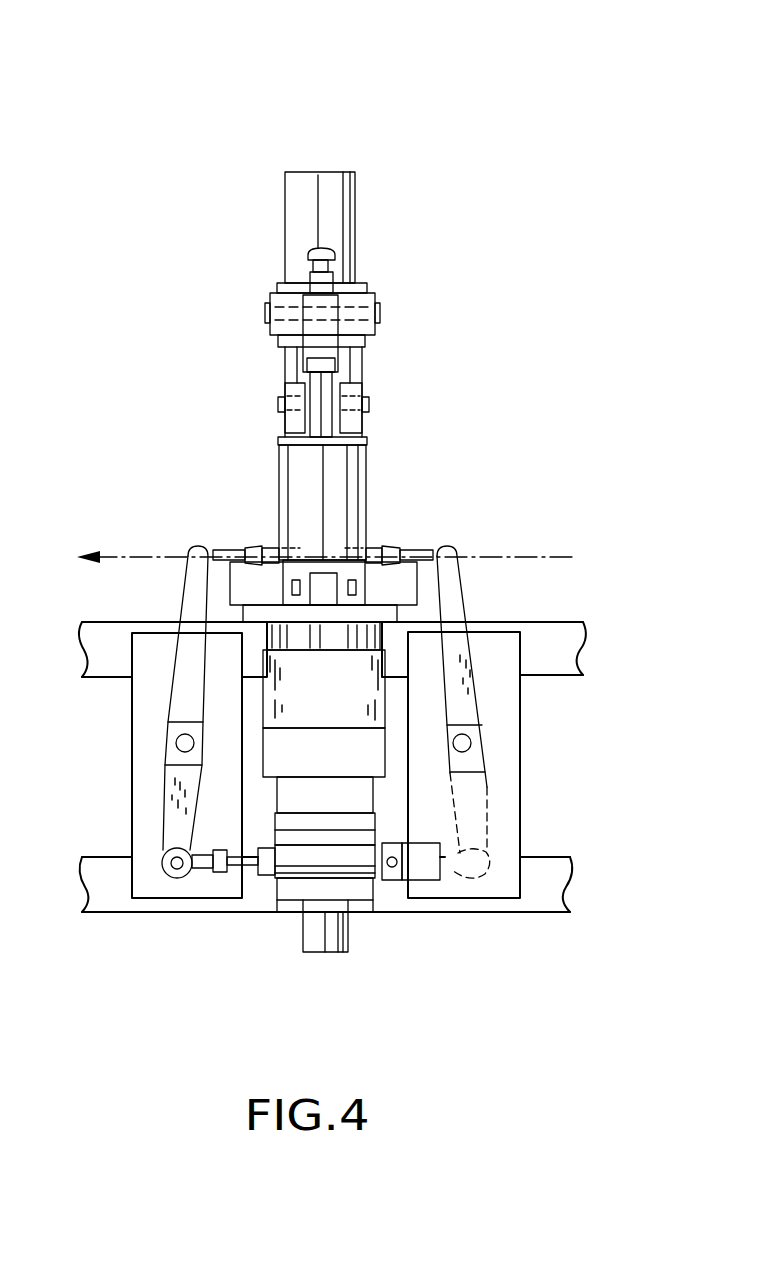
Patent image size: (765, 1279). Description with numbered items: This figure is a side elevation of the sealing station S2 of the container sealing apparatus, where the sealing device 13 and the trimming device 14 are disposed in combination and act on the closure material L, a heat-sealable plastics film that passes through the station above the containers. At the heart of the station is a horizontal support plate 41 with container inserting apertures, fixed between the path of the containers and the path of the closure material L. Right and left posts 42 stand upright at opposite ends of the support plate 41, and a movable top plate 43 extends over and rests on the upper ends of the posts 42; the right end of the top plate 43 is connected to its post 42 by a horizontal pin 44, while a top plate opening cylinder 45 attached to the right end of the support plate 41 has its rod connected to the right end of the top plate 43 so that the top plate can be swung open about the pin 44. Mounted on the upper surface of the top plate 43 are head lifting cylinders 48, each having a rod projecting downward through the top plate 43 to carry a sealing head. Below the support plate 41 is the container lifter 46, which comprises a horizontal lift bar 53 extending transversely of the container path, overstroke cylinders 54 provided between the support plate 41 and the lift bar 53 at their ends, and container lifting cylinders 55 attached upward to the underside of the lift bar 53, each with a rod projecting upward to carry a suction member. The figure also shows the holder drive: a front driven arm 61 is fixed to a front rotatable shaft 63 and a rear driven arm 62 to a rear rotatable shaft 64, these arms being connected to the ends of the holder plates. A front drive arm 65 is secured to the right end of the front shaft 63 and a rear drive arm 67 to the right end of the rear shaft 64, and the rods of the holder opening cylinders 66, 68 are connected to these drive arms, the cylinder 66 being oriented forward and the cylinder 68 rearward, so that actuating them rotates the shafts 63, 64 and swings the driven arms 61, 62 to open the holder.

The sealing station S2 is at (325, 128).
The head lifting cylinder 48 is at (292, 205).
The sealing device 13 is at (392, 246).
The trimming device 14 is at (402, 298).
The movable top plate 43 is at (372, 325).
The horizontal pin 44 is at (368, 402).
The post 42 is at (362, 423).
The top plate opening cylinder 45 is at (362, 465).
The closure material L is at (110, 550).
The horizontal support plate 41 is at (452, 607).
The front driven arm 61 is at (195, 597).
The rear driven arm 62 is at (462, 603).
The overstroke cylinder 54 is at (300, 712).
The front rotatable shaft 63 is at (185, 743).
The rear rotatable shaft 64 is at (464, 744).
The horizontal lift bar 53 is at (380, 793).
The rear drive arm 67 is at (486, 820).
The front drive arm 65 is at (165, 810).
The holder opening cylinder 66 is at (293, 877).
The container lifting cylinder 55 is at (320, 942).
The container lifter 46 is at (366, 936).
The holder opening cylinder 68 is at (450, 872).